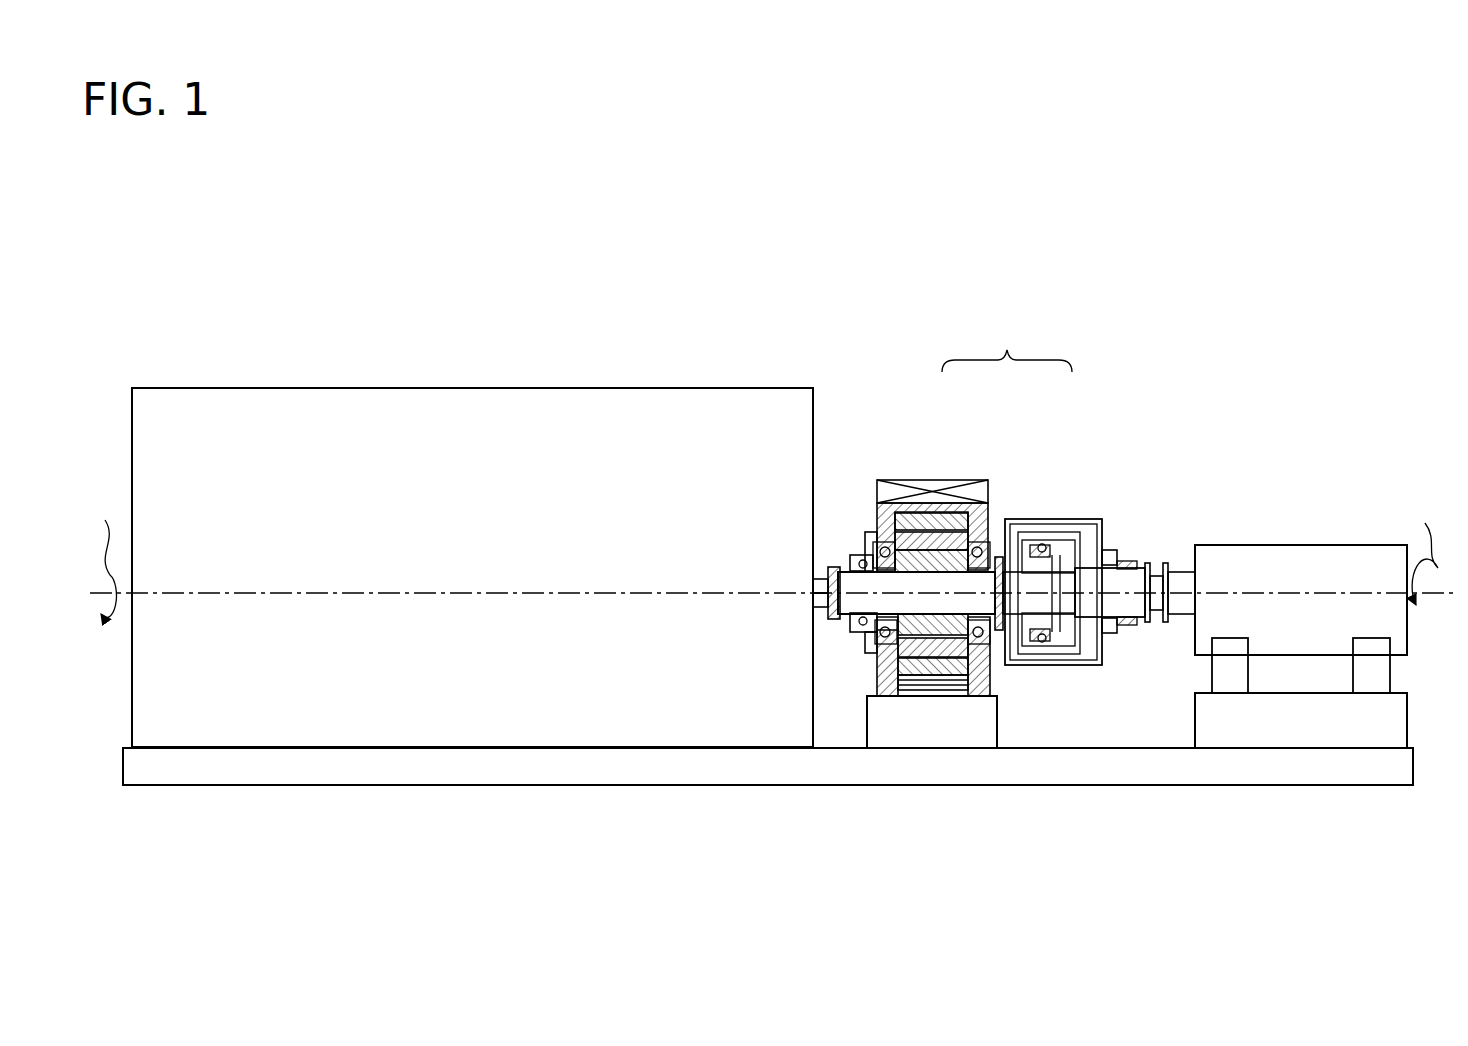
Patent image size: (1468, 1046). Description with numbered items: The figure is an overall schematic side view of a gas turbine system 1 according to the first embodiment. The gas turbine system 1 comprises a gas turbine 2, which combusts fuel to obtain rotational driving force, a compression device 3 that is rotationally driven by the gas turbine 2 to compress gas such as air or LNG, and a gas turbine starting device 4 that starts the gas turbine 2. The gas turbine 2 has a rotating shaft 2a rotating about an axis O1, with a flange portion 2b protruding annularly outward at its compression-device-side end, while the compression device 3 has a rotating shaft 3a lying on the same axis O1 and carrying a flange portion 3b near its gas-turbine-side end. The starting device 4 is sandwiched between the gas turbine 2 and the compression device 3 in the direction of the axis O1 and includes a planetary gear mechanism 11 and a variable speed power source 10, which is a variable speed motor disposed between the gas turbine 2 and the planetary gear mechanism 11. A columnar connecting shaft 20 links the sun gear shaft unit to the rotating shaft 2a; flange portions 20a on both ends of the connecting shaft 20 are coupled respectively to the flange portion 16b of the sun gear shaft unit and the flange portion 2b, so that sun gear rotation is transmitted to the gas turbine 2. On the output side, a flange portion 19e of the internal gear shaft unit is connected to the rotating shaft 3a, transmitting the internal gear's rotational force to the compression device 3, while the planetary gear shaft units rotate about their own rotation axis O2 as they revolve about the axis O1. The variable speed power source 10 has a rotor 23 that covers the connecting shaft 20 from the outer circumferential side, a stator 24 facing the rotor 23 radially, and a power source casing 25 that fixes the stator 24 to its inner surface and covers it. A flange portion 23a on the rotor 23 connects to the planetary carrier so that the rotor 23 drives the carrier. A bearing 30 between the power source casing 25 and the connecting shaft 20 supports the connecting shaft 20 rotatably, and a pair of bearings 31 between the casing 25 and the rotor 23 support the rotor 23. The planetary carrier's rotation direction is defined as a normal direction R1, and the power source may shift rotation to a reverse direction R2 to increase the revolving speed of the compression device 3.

The gas turbine system 1 is at (886, 286).
The gas turbine 2 is at (407, 403).
The rotating shaft 2a is at (817, 580).
The flange portion 2b is at (817, 612).
The compression device 3 is at (1315, 553).
The rotating shaft 3a is at (1178, 578).
The flange portion 3b is at (1165, 622).
The gas turbine starting device 4 is at (1007, 343).
The variable speed power source 10 is at (933, 466).
The planetary gear mechanism 11 is at (1088, 552).
The flange portion 16b is at (1060, 578).
The flange portion 19e is at (1145, 622).
The connecting shaft 20 is at (815, 604).
The flange portions 20a is at (813, 585).
The rotor 23 is at (940, 630).
The flange portion 23a is at (1005, 628).
The stator 24 is at (915, 525).
The power source casing 25 is at (980, 690).
The bearing 30 is at (862, 625).
The bearings 31 is at (880, 545).
The axis O1 is at (372, 593).
The rotation axis O2 is at (1040, 575).
The normal direction R1 is at (107, 554).
The reverse direction R2 is at (1426, 549).